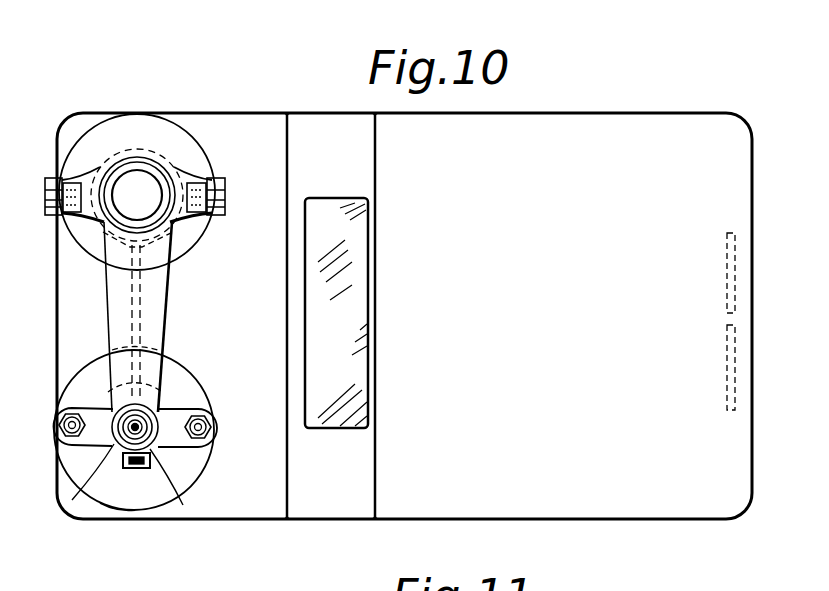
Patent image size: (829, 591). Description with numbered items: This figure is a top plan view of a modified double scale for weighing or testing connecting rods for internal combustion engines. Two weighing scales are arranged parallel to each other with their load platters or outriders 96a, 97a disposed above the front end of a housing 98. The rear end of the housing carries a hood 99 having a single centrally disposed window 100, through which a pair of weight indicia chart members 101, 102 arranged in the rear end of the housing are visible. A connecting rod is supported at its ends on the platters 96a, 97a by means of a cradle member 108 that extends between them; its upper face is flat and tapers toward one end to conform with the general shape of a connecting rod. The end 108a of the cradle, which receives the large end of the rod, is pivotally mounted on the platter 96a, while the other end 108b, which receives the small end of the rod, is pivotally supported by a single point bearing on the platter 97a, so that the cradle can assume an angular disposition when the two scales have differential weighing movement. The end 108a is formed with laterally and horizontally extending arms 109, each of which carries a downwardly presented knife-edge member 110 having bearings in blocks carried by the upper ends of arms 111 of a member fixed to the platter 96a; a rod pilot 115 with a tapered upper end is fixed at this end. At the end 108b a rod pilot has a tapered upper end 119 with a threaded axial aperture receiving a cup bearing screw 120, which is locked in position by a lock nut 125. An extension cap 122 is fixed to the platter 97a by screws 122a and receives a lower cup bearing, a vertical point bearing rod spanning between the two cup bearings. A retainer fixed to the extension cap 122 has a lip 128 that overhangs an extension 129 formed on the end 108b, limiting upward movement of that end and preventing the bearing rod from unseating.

The load platter 96a is at (118, 125).
The load platter 97a is at (117, 497).
The housing 98 is at (253, 124).
The hood 99 is at (542, 128).
The window 100 is at (357, 322).
The weight indicia chart member 101 is at (727, 255).
The weight indicia chart member 102 is at (727, 395).
The cradle member 108 is at (162, 306).
The end of cradle 108a is at (150, 162).
The end of cradle 108b is at (112, 438).
The arms 109 is at (200, 187).
The knife-edge member 110 is at (46, 178).
The arms 111 is at (50, 215).
The rod pilot 115 is at (137, 195).
The tapered upper end 119 is at (120, 412).
The cup bearing screw 120 is at (157, 413).
The extension cap 122 is at (180, 410).
The screws 122a is at (75, 416).
The lock nut 125 is at (125, 445).
The lip 128 is at (128, 470).
The extension 129 is at (157, 455).